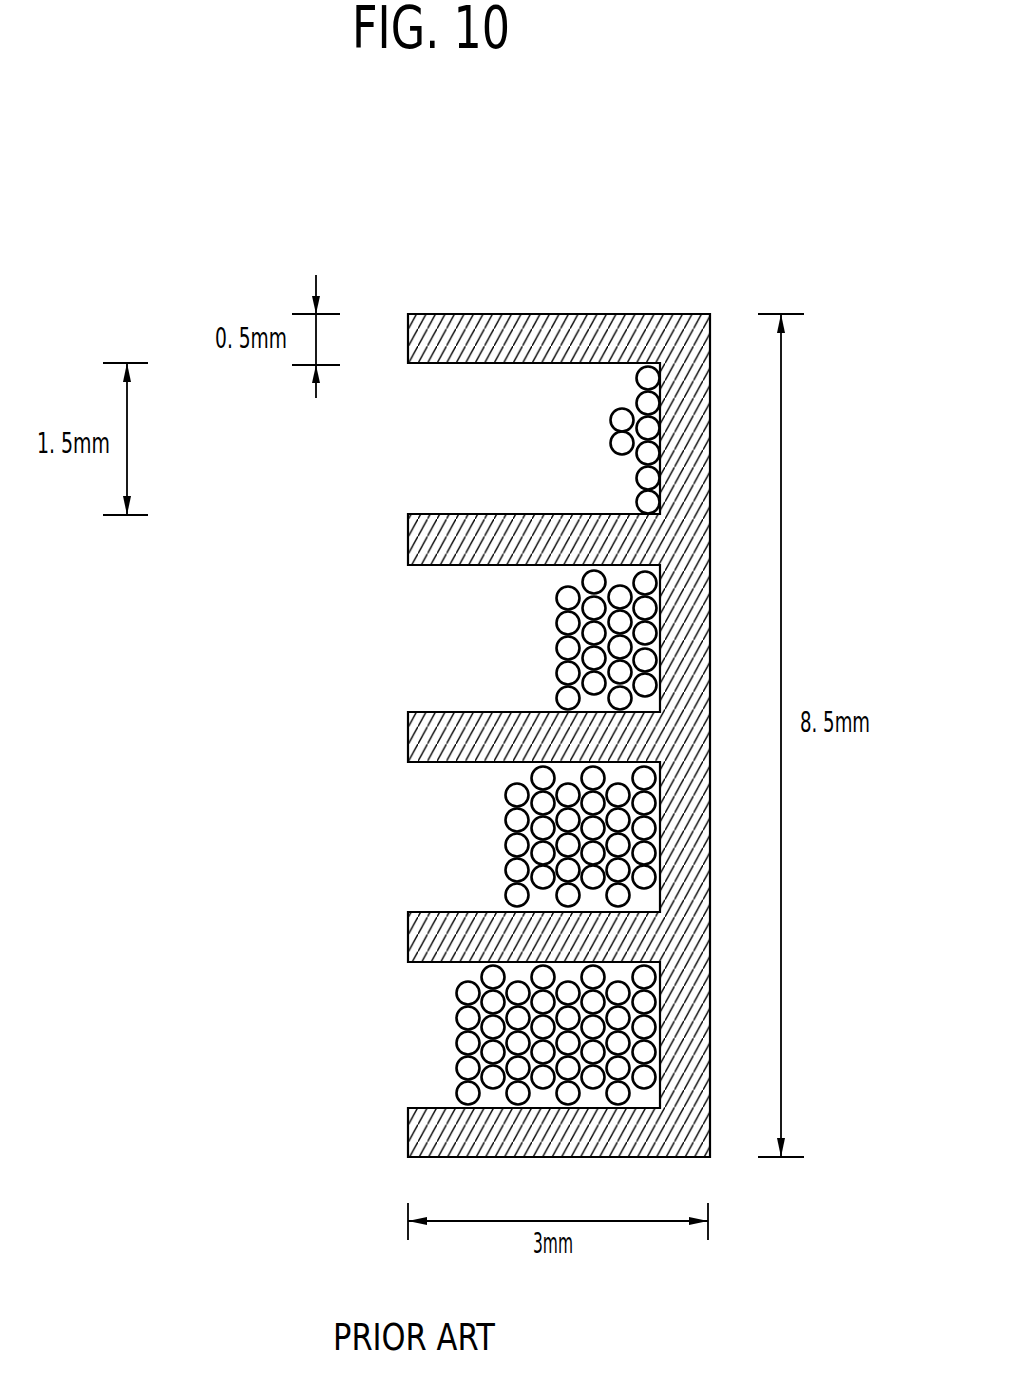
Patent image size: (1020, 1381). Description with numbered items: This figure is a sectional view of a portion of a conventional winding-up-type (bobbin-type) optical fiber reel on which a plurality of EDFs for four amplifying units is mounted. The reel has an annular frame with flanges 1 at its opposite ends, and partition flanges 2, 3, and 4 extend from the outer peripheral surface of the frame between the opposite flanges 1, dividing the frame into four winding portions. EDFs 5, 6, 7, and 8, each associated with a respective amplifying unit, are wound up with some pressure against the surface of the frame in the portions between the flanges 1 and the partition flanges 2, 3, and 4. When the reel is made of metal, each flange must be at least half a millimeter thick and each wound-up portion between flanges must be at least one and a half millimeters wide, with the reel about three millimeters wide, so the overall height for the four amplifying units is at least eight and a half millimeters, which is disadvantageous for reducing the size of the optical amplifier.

The flanges 1 is at (424, 314).
The partition flange 2 is at (408, 541).
The partition flange 3 is at (408, 737).
The partition flange 4 is at (408, 930).
The EDF 5 is at (575, 433).
The EDF 6 is at (530, 637).
The EDF 7 is at (485, 832).
The EDF 8 is at (438, 1027).